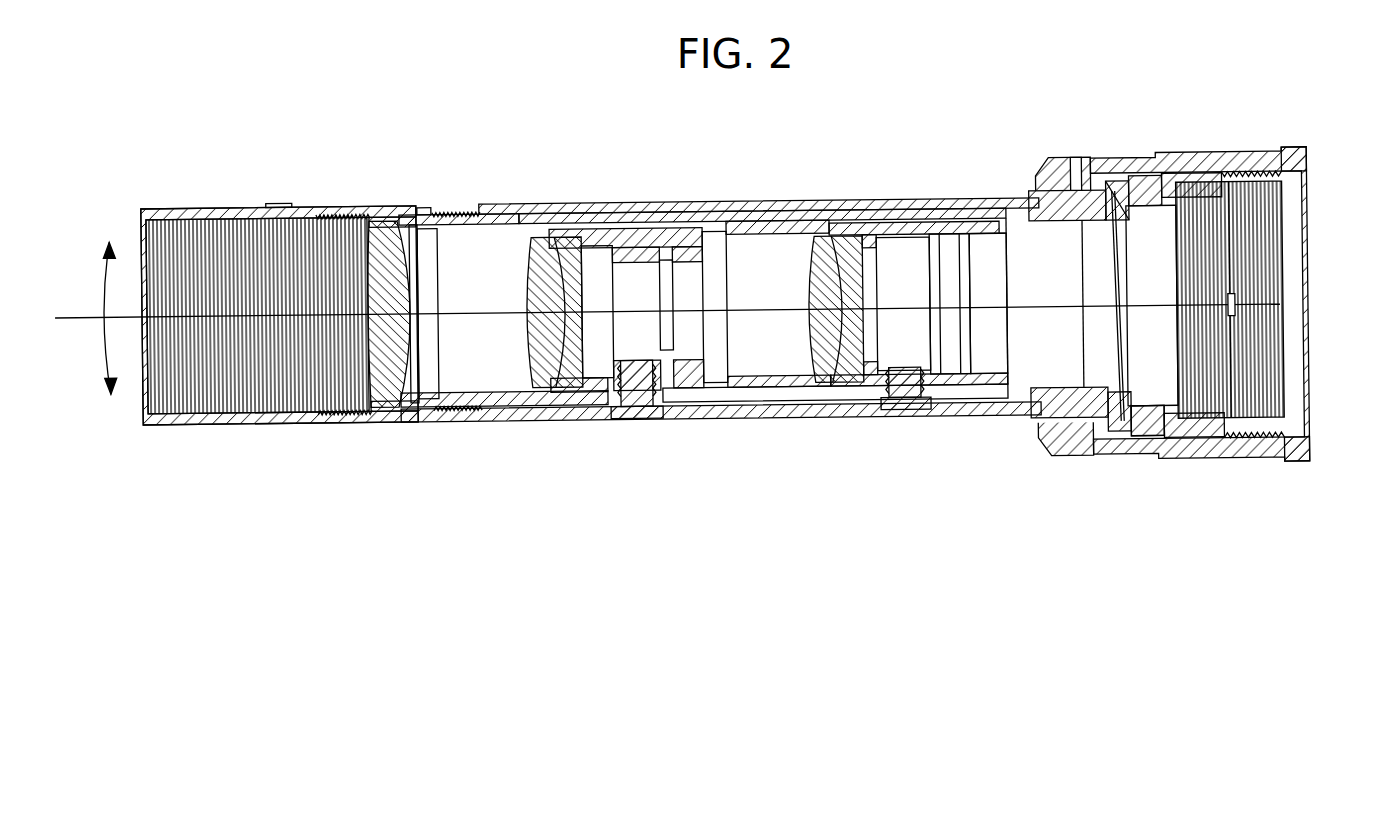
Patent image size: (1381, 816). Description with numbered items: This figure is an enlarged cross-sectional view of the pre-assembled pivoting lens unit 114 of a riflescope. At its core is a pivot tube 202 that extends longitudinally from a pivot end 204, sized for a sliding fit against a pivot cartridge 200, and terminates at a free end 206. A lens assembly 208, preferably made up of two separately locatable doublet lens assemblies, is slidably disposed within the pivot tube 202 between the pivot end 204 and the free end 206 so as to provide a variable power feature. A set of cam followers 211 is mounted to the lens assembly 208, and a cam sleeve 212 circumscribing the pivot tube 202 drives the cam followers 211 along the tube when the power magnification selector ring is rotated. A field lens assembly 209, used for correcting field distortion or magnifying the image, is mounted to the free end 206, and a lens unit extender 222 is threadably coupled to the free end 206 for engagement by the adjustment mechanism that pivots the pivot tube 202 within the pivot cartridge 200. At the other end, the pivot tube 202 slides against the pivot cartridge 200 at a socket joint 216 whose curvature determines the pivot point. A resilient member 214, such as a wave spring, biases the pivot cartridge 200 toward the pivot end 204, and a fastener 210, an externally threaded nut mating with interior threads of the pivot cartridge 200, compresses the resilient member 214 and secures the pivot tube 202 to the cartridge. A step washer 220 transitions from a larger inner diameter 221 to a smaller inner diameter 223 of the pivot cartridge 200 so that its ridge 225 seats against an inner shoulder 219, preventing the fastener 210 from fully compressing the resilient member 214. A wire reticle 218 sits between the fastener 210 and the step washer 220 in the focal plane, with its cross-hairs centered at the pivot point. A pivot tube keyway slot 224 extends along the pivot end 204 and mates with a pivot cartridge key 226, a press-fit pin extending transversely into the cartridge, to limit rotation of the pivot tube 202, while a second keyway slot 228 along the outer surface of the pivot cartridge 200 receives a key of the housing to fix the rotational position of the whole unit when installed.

The pre-assembled pivoting lens unit 114 is at (780, 519).
The pivot cartridge 200 is at (1260, 462).
The pivot tube 202 is at (508, 415).
The pivot end 204 is at (995, 430).
The free end 206 is at (413, 424).
The lens assembly 208 is at (525, 221).
The field lens assembly 209 is at (387, 232).
The fastener 210 is at (1260, 260).
The cam followers 211 is at (660, 418).
The cam sleeve 212 is at (522, 220).
The resilient member 214 is at (1097, 405).
The socket joint 216 is at (1040, 437).
The wire reticle 218 is at (1197, 378).
The inner shoulder 219 is at (1147, 432).
The step washer 220 is at (1172, 236).
The larger inner diameter 221 is at (1148, 240).
The lens unit extender 222 is at (215, 417).
The smaller inner diameter 223 is at (1107, 175).
The pivot tube keyway slot 224 is at (1088, 175).
The ridge 225 is at (1125, 432).
The pivot cartridge key 226 is at (1070, 174).
The second keyway slot 228 is at (1253, 164).